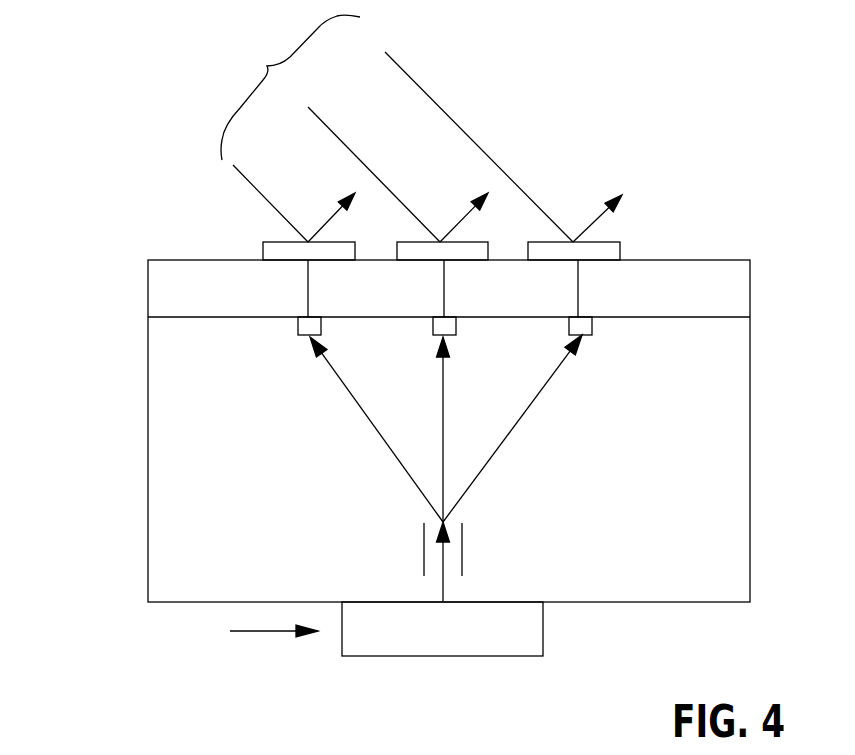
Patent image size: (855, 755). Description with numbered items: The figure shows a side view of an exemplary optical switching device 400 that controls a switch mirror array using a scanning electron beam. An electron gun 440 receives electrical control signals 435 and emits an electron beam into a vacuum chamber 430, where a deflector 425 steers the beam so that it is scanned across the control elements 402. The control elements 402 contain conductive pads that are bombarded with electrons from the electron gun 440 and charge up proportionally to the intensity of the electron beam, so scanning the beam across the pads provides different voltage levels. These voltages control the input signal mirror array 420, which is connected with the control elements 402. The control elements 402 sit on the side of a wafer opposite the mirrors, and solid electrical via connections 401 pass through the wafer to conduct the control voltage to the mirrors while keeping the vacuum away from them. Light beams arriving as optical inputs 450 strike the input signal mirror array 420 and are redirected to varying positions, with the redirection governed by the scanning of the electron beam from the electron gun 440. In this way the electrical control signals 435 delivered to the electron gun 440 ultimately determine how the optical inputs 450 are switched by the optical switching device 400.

The optical switching device 400 is at (760, 149).
The solid electrical via connections 401 is at (580, 290).
The control elements 402 is at (592, 330).
The input signal mirror array 420 is at (272, 248).
The deflector 425 is at (462, 558).
The vacuum chamber 430 is at (678, 587).
The electrical control signals 435 is at (166, 637).
The electron gun 440 is at (462, 652).
The optical inputs 450 is at (376, 128).